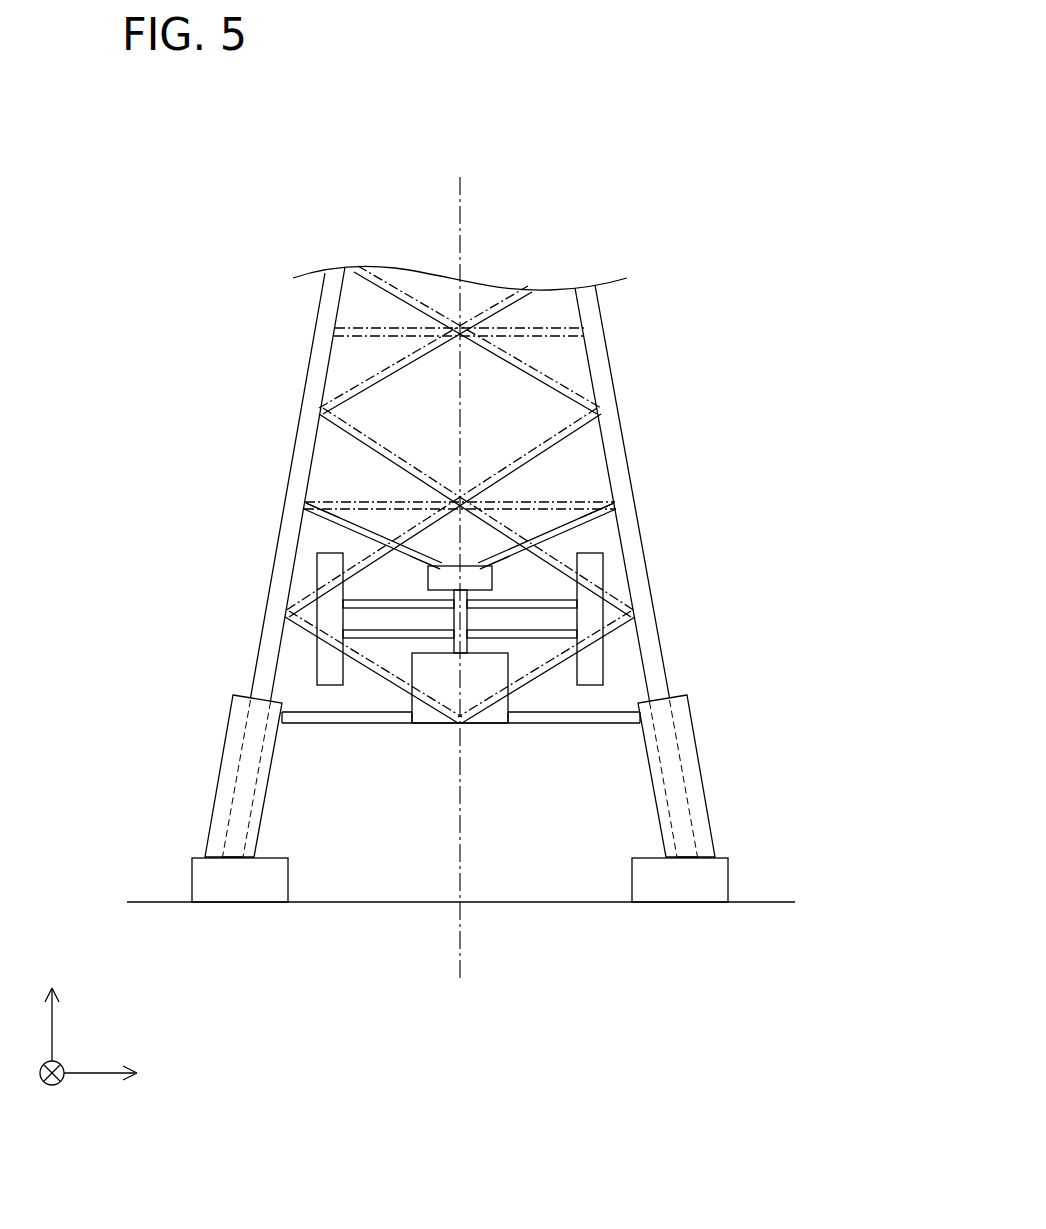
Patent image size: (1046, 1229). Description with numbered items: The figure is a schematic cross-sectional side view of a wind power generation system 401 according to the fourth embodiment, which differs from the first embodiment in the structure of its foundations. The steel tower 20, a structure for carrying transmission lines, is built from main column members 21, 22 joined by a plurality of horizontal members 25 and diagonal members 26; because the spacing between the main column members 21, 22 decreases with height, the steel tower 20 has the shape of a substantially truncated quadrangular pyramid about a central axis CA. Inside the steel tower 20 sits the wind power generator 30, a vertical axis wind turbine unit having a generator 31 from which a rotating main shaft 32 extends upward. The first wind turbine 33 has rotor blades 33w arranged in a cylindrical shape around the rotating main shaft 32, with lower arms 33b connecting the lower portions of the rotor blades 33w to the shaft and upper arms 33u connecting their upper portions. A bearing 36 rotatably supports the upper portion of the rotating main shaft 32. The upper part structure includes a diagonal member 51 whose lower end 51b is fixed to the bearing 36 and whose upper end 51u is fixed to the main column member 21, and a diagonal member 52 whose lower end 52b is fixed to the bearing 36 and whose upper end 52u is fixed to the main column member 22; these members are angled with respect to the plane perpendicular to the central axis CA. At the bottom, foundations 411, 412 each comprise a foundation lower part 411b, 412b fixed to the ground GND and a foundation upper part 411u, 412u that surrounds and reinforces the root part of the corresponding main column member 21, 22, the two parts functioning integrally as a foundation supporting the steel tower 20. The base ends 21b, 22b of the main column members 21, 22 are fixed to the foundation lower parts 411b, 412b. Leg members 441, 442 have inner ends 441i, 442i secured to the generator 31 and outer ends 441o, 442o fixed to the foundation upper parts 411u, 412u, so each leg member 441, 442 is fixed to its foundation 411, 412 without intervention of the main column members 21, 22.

The wind power generation system 401 is at (843, 118).
The steel tower 20 is at (738, 268).
The main column member 21 is at (335, 288).
The main column member 22 is at (588, 290).
The base end 21b is at (230, 860).
The base end 22b is at (690, 860).
The horizontal member 25 is at (380, 326).
The diagonal member 26 is at (380, 372).
The wind power generator 30 is at (795, 579).
The generator 31 is at (490, 660).
The rotating main shaft 32 is at (470, 617).
The first wind turbine 33 is at (618, 647).
The upper arm 33u is at (380, 606).
The lower arm 33b is at (388, 638).
The rotor blade 33w is at (318, 560).
The bearing 36 is at (468, 582).
The diagonal member 51 is at (312, 514).
The upper end 51u is at (307, 504).
The lower end 51b is at (428, 570).
The diagonal member 52 is at (610, 522).
The upper end 52u is at (607, 509).
The lower end 52b is at (490, 573).
The foundation 411 is at (82, 792).
The foundation upper part 411u is at (215, 793).
The foundation lower part 411b is at (203, 877).
The foundation 412 is at (843, 750).
The foundation upper part 412u is at (702, 773).
The foundation lower part 412b is at (712, 875).
The leg member 441 is at (358, 718).
The outer end 441o is at (282, 724).
The inner end 441i is at (425, 724).
The leg member 442 is at (560, 718).
The inner end 442i is at (492, 724).
The outer end 442o is at (633, 724).
The central axis CA is at (462, 190).
The ground GND is at (790, 901).